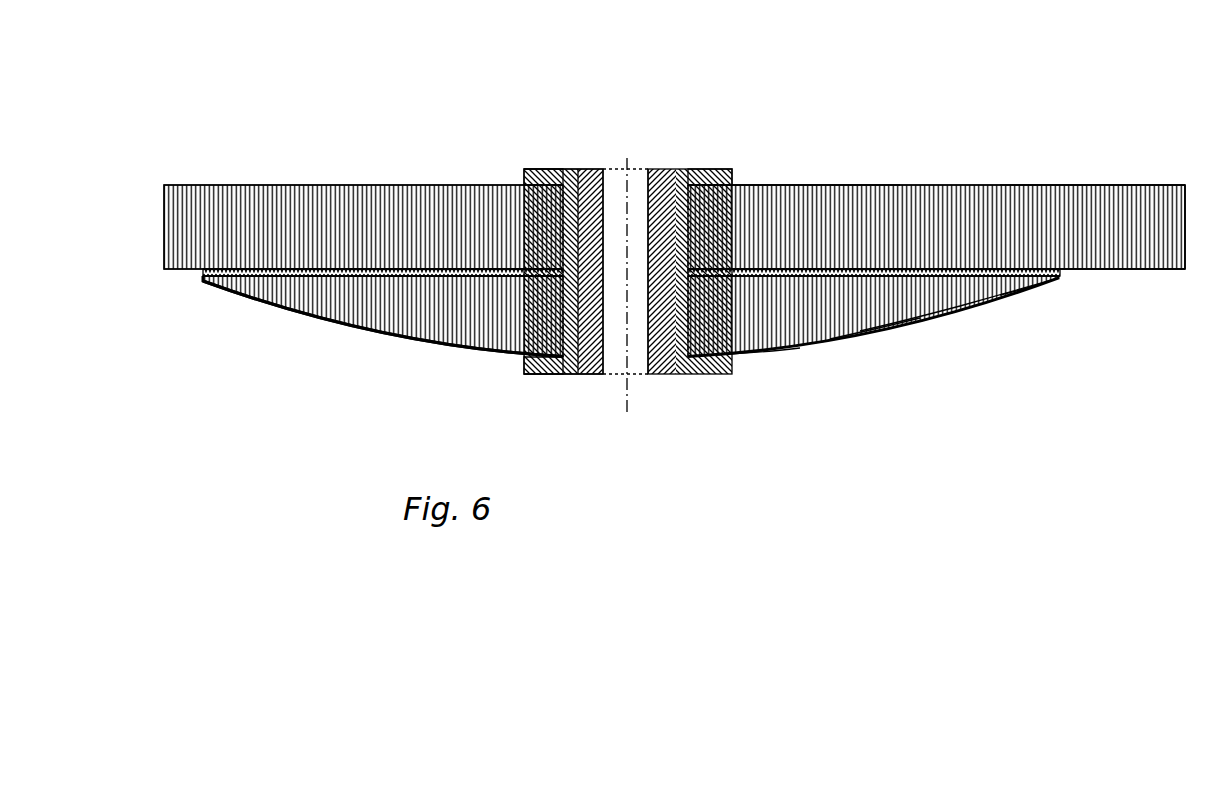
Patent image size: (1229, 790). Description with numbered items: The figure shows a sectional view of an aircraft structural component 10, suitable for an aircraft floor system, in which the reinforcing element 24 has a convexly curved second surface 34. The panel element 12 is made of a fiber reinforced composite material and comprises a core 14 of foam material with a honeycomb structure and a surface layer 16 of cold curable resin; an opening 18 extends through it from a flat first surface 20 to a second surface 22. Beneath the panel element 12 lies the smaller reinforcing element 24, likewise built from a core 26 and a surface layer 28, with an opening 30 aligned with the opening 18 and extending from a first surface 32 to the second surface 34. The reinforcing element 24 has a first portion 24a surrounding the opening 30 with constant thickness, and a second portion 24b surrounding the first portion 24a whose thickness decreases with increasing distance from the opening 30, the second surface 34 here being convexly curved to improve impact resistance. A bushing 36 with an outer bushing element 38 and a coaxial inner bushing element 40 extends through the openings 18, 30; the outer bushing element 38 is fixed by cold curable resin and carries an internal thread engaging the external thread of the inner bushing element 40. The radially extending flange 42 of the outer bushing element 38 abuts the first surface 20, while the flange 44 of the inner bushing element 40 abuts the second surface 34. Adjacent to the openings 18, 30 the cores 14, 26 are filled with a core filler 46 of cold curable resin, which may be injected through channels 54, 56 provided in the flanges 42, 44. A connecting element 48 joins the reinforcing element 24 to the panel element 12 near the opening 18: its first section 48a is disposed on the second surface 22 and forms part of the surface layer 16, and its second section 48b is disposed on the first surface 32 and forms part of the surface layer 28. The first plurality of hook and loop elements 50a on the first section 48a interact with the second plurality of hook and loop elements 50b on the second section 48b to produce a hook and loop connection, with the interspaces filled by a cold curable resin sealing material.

The aircraft structural component 10 is at (916, 91).
The panel element 12 is at (1028, 207).
The core 14 is at (1098, 206).
The surface layer 16 is at (1189, 200).
The opening 18 is at (677, 168).
The first surface 20 is at (793, 184).
The second surface 22 is at (1115, 270).
The reinforcing element 24 is at (791, 334).
The first portion 24a is at (745, 363).
The second portion 24b is at (927, 321).
The core 26 is at (882, 322).
The surface layer 28 is at (977, 318).
The opening 30 is at (667, 375).
The first surface 32 is at (1046, 291).
The second surface 34 is at (1010, 310).
The bushing 36 is at (563, 170).
The outer bushing element 38 is at (572, 168).
The inner bushing element 40 is at (593, 168).
The flange 42 is at (537, 166).
The flange 44 is at (537, 374).
The core filler 46 is at (723, 168).
The connecting element 48 is at (174, 279).
The first section 48a is at (217, 257).
The second section 48b is at (225, 279).
The first plurality of hook and loop elements 50a is at (263, 243).
The second plurality of hook and loop elements 50b is at (287, 278).
The channel 54 is at (558, 166).
The channel 56 is at (560, 374).